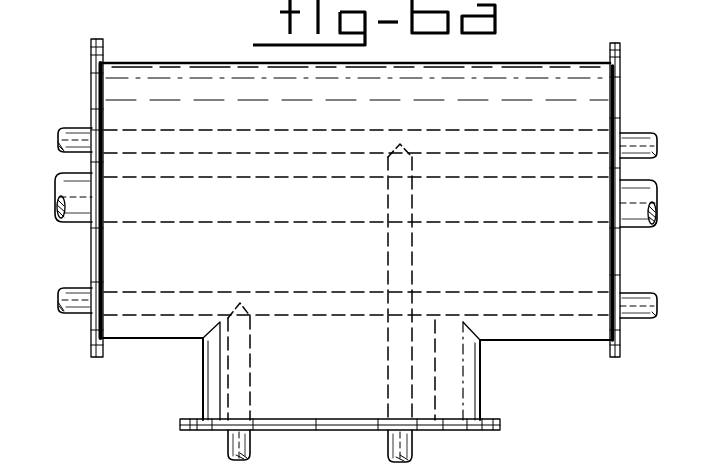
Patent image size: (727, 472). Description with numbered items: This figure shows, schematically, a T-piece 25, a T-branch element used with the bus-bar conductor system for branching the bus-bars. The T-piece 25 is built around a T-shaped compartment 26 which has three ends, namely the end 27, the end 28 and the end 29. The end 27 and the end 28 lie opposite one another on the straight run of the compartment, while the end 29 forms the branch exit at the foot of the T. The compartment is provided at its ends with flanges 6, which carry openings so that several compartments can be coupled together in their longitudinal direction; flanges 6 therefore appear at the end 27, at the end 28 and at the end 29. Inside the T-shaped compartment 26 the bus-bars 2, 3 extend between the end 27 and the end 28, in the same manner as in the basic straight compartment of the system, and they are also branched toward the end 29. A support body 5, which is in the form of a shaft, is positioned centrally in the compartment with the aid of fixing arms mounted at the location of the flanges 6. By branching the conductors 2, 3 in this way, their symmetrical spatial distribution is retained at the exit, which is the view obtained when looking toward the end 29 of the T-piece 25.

The bus-bar 2 is at (76, 133).
The bus-bar 3 is at (66, 313).
The support body 5 is at (62, 190).
The flange 6 is at (92, 353).
The T-piece 25 is at (183, 352).
The T-shaped compartment 26 is at (197, 78).
The end 27 is at (92, 258).
The end 28 is at (622, 258).
The end 29 is at (336, 426).